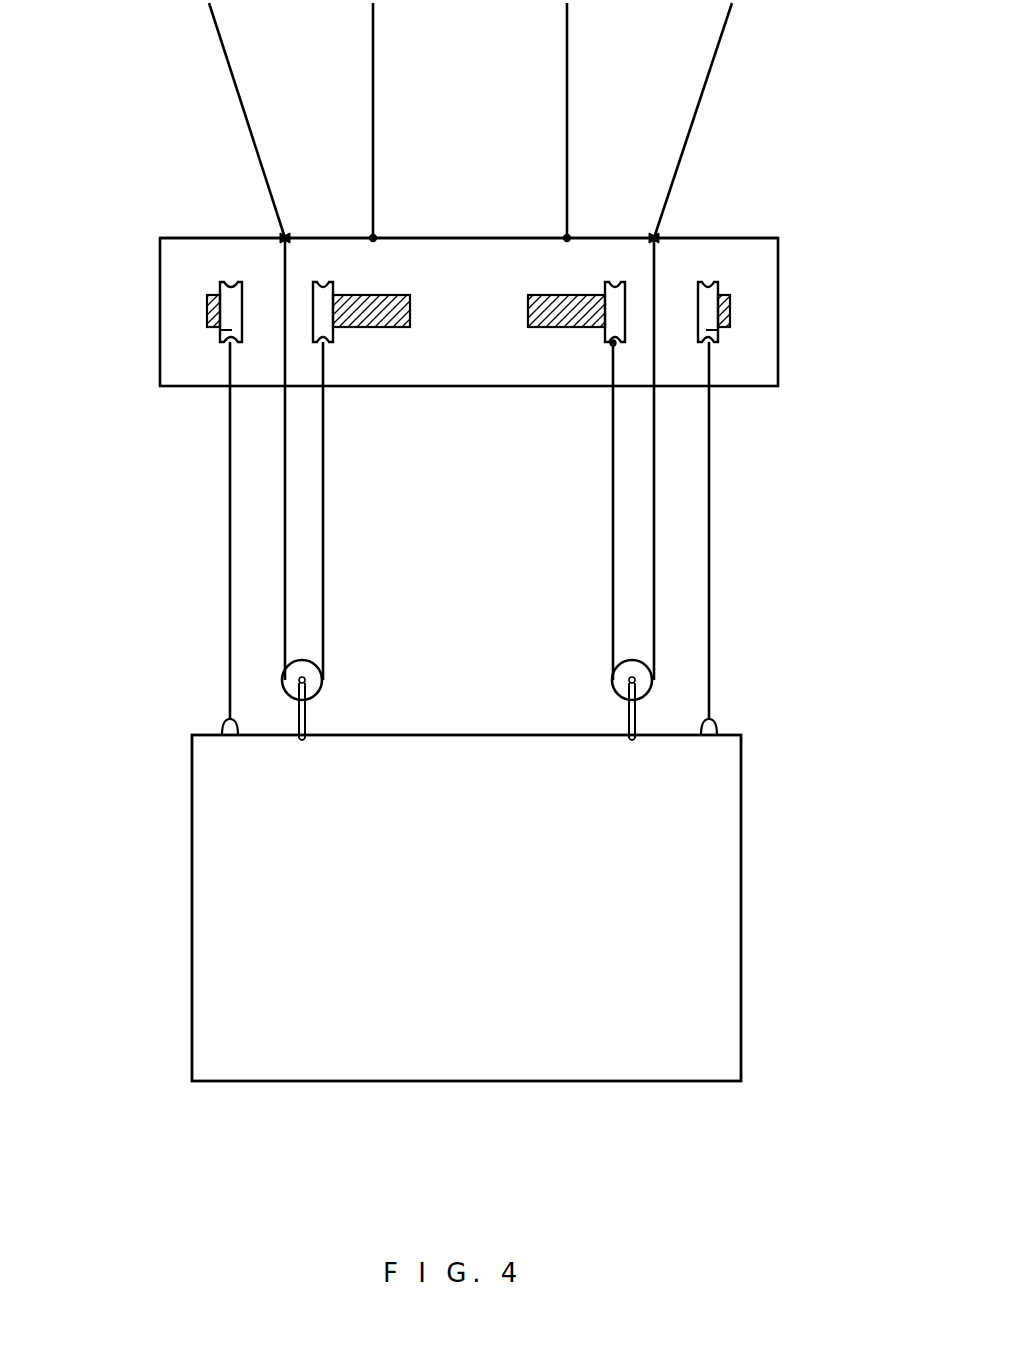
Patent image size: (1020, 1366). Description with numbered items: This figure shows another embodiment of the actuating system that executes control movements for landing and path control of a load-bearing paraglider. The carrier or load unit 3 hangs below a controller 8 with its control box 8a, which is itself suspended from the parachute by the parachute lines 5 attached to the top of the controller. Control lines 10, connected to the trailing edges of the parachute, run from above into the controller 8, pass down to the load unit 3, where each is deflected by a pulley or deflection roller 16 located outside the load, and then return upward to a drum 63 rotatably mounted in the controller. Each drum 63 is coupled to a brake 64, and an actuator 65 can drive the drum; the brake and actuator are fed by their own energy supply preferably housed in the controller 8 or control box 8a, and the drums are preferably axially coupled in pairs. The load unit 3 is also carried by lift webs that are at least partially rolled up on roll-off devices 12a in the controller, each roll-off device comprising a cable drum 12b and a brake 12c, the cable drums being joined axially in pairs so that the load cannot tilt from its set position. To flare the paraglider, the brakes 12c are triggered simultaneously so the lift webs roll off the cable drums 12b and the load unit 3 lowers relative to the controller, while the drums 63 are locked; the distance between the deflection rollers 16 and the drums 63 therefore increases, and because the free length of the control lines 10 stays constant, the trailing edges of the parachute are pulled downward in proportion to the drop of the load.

The load unit 3 is at (730, 882).
The parachute lines 5 is at (373, 62).
The controller 8 is at (778, 258).
The control box 8a is at (435, 248).
The control lines 10 is at (230, 78).
The roll-off device 12a is at (196, 318).
The cable drum 12b is at (232, 331).
The brake 12c is at (220, 292).
The deflection roller 16 is at (308, 672).
The drum 63 is at (318, 280).
The brake 64 is at (392, 327).
The actuator 65 is at (528, 301).